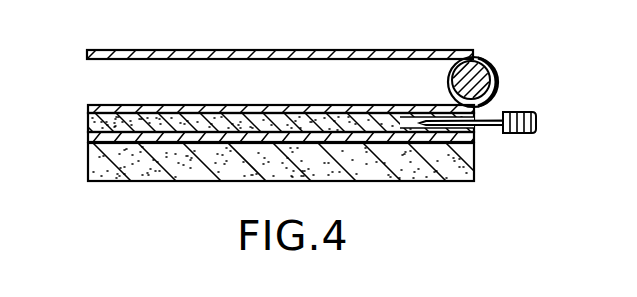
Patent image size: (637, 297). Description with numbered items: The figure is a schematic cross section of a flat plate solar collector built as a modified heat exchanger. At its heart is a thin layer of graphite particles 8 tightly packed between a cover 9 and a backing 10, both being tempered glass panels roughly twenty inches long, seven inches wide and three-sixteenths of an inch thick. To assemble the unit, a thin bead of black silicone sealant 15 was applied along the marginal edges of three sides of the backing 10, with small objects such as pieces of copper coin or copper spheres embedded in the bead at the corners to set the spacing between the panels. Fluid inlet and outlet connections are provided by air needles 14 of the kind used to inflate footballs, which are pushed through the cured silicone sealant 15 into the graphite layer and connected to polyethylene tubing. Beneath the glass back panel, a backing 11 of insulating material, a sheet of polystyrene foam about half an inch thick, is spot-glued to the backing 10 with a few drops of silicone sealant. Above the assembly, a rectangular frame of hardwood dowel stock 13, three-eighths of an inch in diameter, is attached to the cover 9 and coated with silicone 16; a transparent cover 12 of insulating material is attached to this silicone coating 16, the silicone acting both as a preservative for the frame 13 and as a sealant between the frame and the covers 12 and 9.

The thin layer of graphite particles 8 is at (88, 122).
The cover 9 is at (110, 104).
The backing 10 is at (88, 139).
The backing of insulating material 11 is at (88, 165).
The transparent cover 12 is at (97, 50).
The hardwood dowel stock 13 is at (497, 72).
The air needles 14 is at (527, 112).
The silicone sealant 15 is at (480, 128).
The silicone coating 16 is at (487, 65).